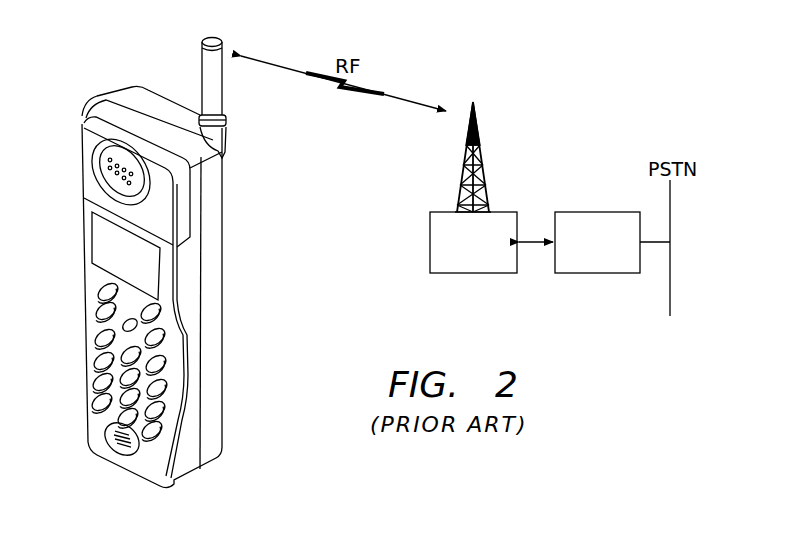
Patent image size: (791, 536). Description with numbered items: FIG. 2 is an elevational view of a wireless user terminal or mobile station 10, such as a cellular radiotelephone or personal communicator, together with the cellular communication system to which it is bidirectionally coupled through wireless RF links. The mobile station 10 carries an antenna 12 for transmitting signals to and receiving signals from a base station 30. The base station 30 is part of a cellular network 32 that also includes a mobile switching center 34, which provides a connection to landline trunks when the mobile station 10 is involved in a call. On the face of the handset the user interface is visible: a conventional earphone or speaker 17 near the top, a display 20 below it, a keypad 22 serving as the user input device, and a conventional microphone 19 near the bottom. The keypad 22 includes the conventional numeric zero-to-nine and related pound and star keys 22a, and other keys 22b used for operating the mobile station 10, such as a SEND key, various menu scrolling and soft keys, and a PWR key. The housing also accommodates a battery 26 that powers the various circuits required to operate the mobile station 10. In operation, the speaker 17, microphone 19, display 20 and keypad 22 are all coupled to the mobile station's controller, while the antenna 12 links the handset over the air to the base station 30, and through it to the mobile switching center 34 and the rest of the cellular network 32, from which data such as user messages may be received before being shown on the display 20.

The mobile station 10 is at (100, 53).
The antenna 12 is at (207, 69).
The speaker 17 is at (100, 163).
The microphone 19 is at (118, 448).
The display 20 is at (98, 236).
The keypad 22 is at (152, 398).
The numeric and related keys 22a is at (102, 360).
The other keys 22b is at (105, 296).
The battery 26 is at (214, 370).
The base station 30 is at (430, 242).
The cellular network 32 is at (643, 289).
The mobile switching center 34 is at (597, 212).